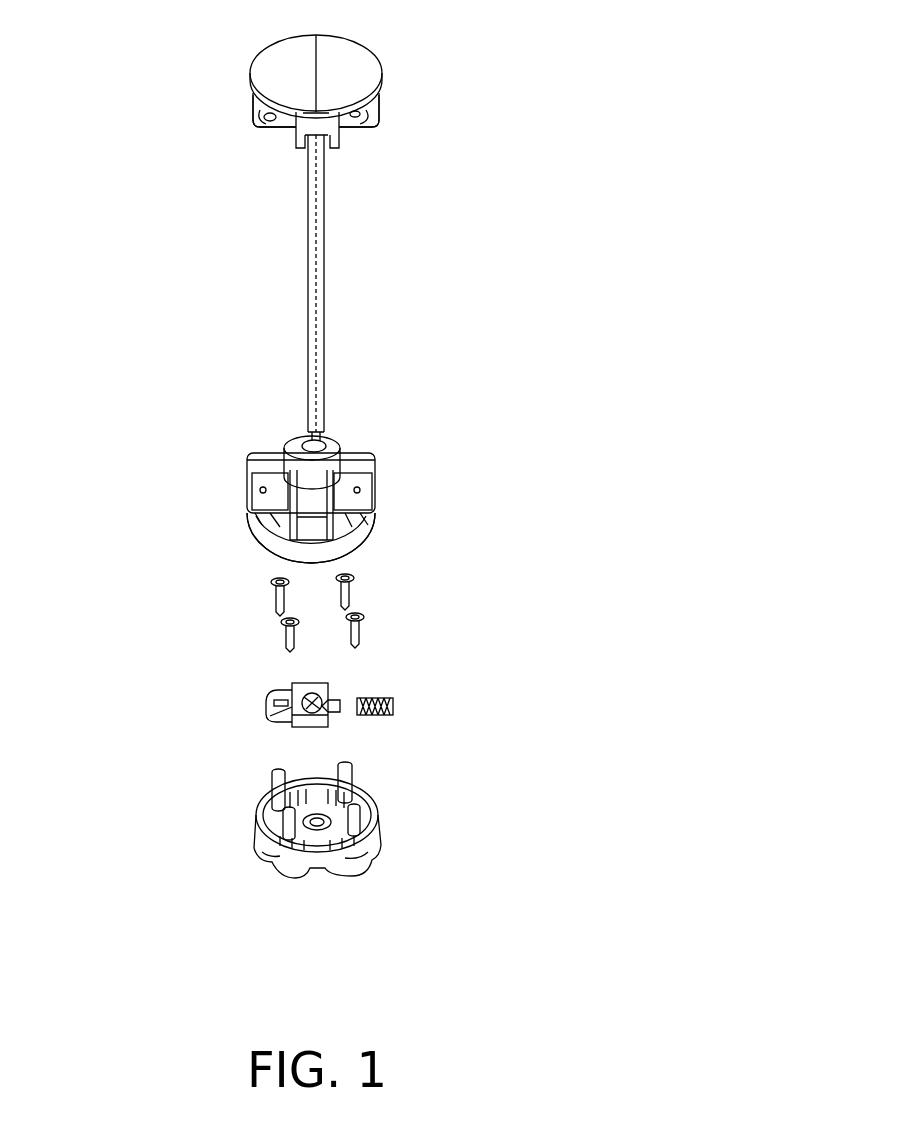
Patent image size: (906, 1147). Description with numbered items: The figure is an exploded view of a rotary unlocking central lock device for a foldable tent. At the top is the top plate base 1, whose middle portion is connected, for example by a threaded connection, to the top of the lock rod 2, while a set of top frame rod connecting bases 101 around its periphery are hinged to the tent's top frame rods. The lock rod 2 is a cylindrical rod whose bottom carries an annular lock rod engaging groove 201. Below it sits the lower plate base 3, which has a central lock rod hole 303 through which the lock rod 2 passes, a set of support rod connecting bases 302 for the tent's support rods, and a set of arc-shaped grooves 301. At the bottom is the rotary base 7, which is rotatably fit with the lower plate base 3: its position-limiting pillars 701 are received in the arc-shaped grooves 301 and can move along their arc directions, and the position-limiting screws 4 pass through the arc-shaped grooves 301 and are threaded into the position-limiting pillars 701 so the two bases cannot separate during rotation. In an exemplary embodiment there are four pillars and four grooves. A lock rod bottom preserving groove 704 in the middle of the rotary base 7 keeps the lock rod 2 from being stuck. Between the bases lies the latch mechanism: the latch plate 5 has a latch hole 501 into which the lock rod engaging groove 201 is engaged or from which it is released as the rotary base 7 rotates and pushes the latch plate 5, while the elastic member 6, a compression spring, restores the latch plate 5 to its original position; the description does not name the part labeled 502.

The top plate base 1 is at (345, 77).
The top frame rod connecting bases 101 is at (345, 125).
The lock rod 2 is at (313, 280).
The lock rod engaging groove 201 is at (325, 432).
The lower plate base 3 is at (257, 537).
The arc-shaped grooves 301 is at (378, 518).
The support rod connecting bases 302 is at (247, 465).
The lock rod hole 303 is at (290, 455).
The position-limiting screws 4 is at (365, 615).
The latch plate 5 is at (283, 693).
The latch hole 501 is at (270, 713).
The locking pin 502 is at (342, 700).
The elastic member 6 is at (395, 707).
The rotary base 7 is at (385, 835).
The position-limiting pillars 701 is at (365, 767).
The lock rod bottom preserving groove 704 is at (360, 858).